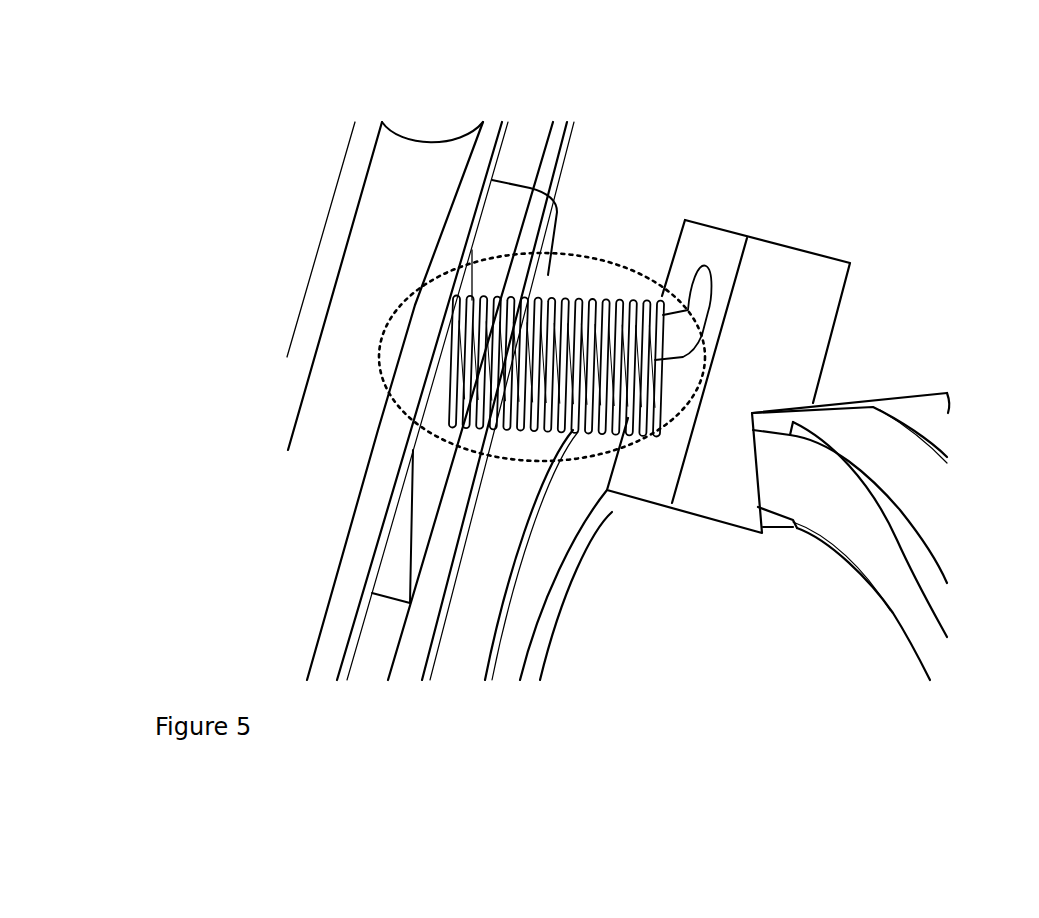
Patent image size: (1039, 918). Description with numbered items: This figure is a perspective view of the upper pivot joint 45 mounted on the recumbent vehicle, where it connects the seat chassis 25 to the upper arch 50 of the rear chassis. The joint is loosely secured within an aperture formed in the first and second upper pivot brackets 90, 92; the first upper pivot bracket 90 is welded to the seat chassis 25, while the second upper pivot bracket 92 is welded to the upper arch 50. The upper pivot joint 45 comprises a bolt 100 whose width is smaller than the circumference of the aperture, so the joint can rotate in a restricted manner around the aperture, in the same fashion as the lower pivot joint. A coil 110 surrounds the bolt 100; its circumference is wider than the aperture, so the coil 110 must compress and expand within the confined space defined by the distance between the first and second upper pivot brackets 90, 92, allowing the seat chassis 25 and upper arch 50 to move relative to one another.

The seat chassis 25 is at (393, 213).
The upper pivot joint 45 is at (659, 283).
The upper arch 50 is at (913, 610).
The first upper pivot bracket 90 is at (418, 498).
The second upper pivot bracket 92 is at (806, 310).
The bolt 100 is at (675, 328).
The coil 110 is at (540, 430).